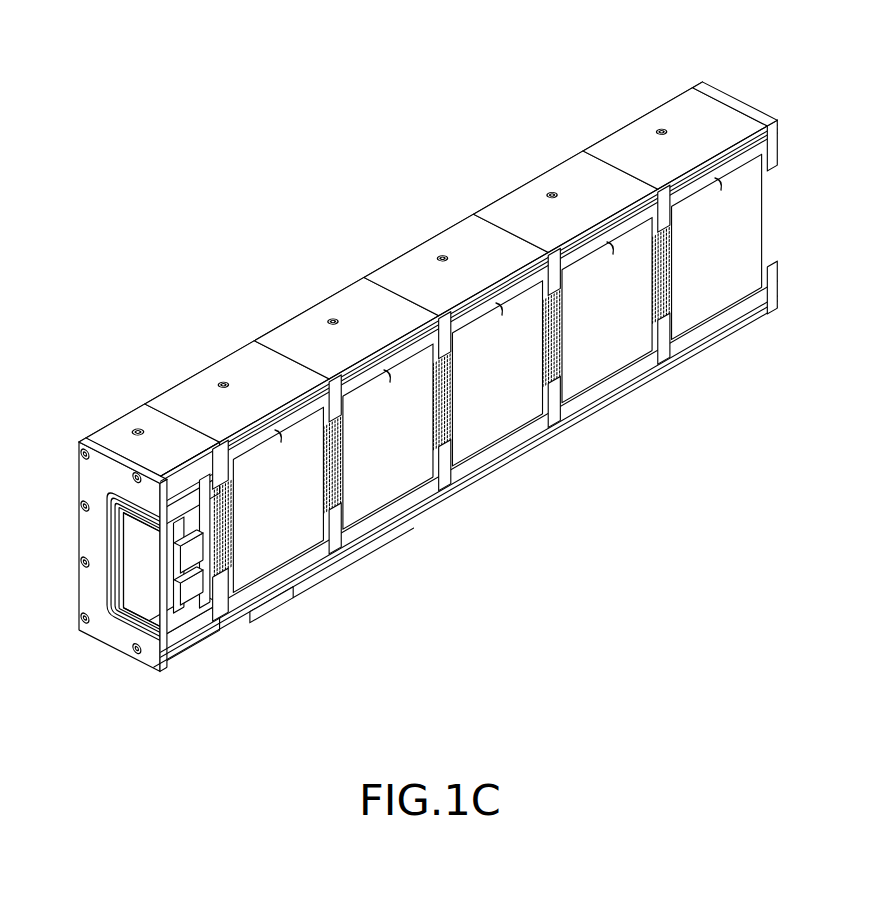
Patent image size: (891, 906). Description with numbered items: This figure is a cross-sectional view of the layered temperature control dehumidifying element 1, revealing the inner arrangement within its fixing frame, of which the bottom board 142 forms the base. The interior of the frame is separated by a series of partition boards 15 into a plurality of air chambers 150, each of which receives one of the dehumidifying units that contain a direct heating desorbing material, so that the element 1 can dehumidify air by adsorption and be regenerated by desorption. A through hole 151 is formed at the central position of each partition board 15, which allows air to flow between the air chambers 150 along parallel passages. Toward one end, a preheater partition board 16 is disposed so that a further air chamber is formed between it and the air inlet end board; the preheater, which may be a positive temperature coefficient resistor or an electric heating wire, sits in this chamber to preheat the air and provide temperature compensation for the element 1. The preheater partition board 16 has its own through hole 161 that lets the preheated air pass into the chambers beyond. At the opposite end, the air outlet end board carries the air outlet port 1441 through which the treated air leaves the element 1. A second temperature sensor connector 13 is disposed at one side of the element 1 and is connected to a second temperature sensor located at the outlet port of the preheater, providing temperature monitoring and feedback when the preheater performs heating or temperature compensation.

The layered temperature control dehumidifying element 1 is at (142, 232).
The second temperature sensor connector 13 is at (277, 601).
The partition board 15 is at (278, 350).
The preheater partition board 16 is at (160, 410).
The bottom board 142 is at (523, 459).
The air chamber 150 is at (281, 440).
The through hole 151 is at (343, 500).
The through hole 161 is at (233, 573).
The air outlet port 1441 is at (773, 237).